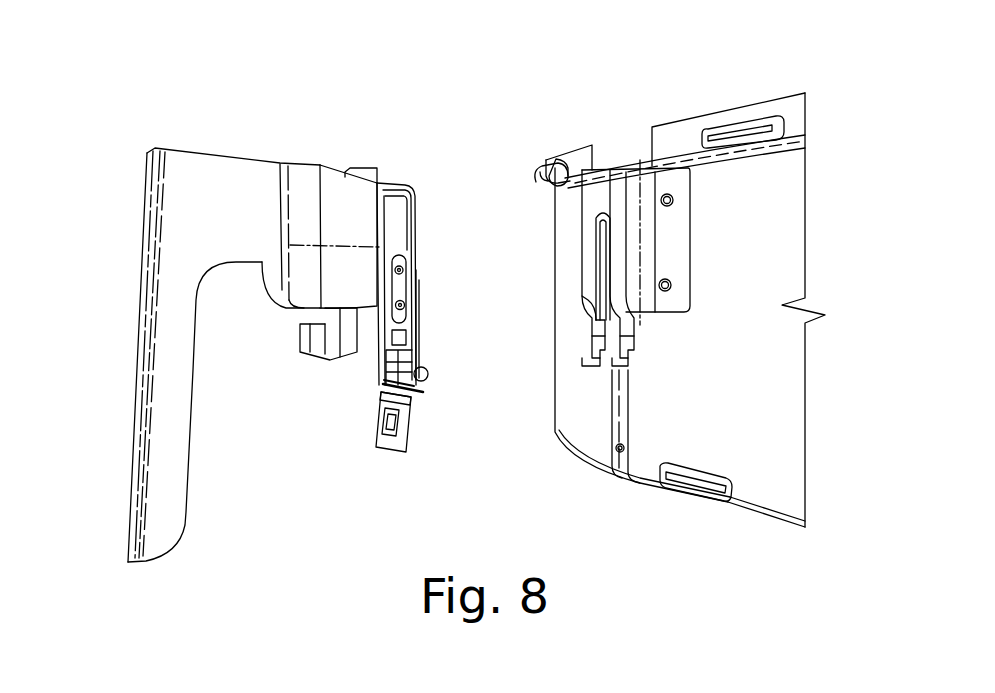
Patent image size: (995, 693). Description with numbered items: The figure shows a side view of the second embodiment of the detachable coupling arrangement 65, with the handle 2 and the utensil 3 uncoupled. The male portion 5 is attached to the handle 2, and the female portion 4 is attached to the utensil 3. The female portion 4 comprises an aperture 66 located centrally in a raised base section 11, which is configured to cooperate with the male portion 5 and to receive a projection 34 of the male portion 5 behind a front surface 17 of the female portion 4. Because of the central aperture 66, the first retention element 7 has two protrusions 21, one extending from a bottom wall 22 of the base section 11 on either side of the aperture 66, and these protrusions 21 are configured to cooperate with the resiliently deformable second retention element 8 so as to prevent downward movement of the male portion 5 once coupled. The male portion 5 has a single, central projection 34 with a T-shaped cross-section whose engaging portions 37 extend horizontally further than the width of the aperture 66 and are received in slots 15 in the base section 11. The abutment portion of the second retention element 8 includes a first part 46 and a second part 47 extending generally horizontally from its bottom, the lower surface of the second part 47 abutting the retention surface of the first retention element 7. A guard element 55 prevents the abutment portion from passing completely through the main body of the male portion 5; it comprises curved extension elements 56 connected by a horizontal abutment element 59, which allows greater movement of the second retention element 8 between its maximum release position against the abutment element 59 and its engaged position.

The handle 2 is at (143, 212).
The utensil 3 is at (793, 380).
The female portion 4 is at (623, 192).
The male portion 5 is at (400, 232).
The first retention element 7 is at (590, 338).
The second retention element 8 is at (404, 333).
The base section 11 is at (587, 187).
The slots 15 is at (620, 226).
The front surface 17 is at (610, 192).
The protrusion 21 is at (592, 368).
The bottom wall 22 is at (630, 320).
The projection 34 is at (416, 248).
The engaging portions 37 is at (419, 290).
The first part 46 is at (428, 373).
The second part 47 is at (426, 393).
The guard element 55 is at (366, 372).
The extension elements 56 is at (398, 392).
The abutment element 59 is at (383, 392).
The detachable coupling arrangement 65 is at (408, 150).
The aperture 66 is at (598, 255).